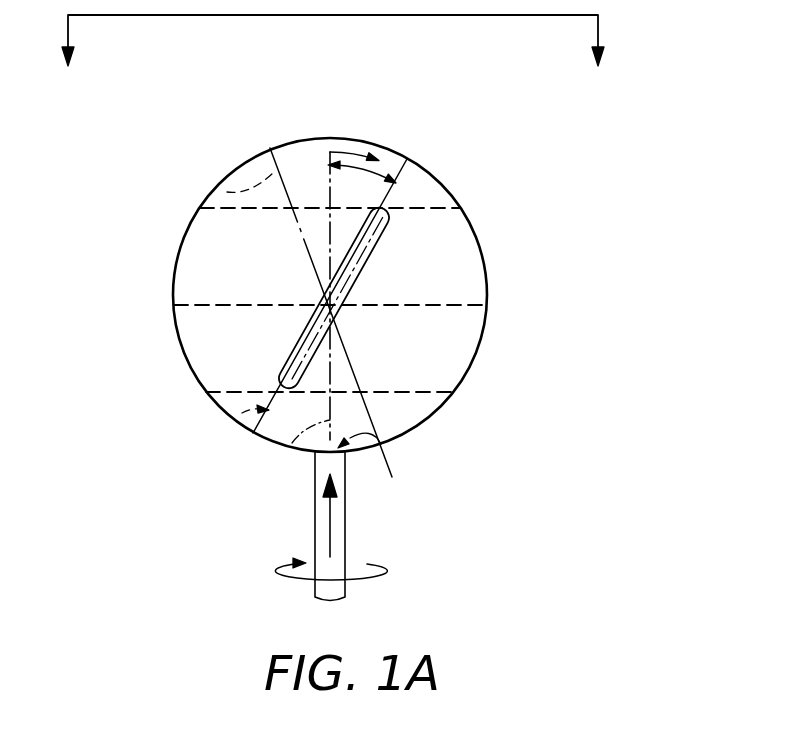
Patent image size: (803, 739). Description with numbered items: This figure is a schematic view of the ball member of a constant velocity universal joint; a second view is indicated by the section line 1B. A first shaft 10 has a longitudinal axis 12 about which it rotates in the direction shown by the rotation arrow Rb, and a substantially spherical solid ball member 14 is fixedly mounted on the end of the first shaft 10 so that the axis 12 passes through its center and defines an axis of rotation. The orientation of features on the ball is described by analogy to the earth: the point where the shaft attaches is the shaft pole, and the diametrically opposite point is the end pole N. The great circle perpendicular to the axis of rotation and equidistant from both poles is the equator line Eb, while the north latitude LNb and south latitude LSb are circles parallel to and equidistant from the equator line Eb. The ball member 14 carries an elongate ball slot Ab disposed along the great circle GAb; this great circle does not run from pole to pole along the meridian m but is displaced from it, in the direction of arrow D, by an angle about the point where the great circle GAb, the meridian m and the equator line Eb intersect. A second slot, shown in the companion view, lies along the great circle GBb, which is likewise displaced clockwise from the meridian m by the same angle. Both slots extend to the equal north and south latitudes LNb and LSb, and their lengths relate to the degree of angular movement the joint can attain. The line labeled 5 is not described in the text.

The section line of FIG. 1B is at (332, 66).
The ball member 14 is at (178, 352).
The equator line Eb is at (457, 306).
The north latitude LNb is at (421, 209).
The south latitude LSb is at (413, 393).
The end pole N is at (330, 152).
The displacement direction arrow D is at (357, 154).
The spin axis line 5 is at (343, 325).
The ball slot Ab is at (283, 363).
The great circle GBb is at (227, 192).
The great circle GAb is at (242, 413).
The meridian m is at (292, 443).
The first shaft 10 is at (315, 528).
The longitudinal axis 12 is at (347, 530).
The rotation arrow Rb is at (300, 581).